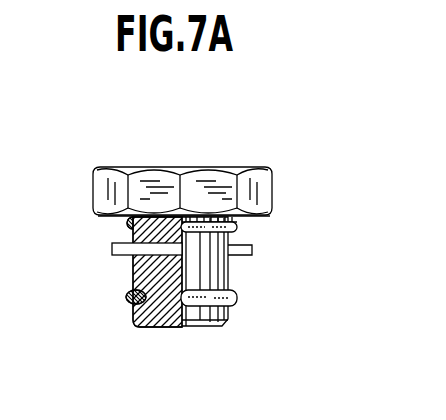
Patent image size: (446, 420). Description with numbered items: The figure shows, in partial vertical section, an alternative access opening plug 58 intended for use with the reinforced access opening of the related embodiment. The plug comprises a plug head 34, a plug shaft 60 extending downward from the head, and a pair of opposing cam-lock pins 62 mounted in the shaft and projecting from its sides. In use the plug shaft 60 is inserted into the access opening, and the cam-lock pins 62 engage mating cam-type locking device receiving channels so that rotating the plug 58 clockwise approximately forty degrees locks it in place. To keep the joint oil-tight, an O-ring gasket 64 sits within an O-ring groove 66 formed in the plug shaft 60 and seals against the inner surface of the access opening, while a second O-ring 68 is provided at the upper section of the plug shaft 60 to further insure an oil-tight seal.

The plug head 34 is at (215, 177).
The alternative access opening plug 58 is at (267, 220).
The plug shaft 60 is at (212, 274).
The cam-lock pins 62 is at (116, 251).
The O-ring gasket 64 is at (127, 295).
The O-ring groove 66 is at (147, 309).
The second O-ring 68 is at (121, 223).